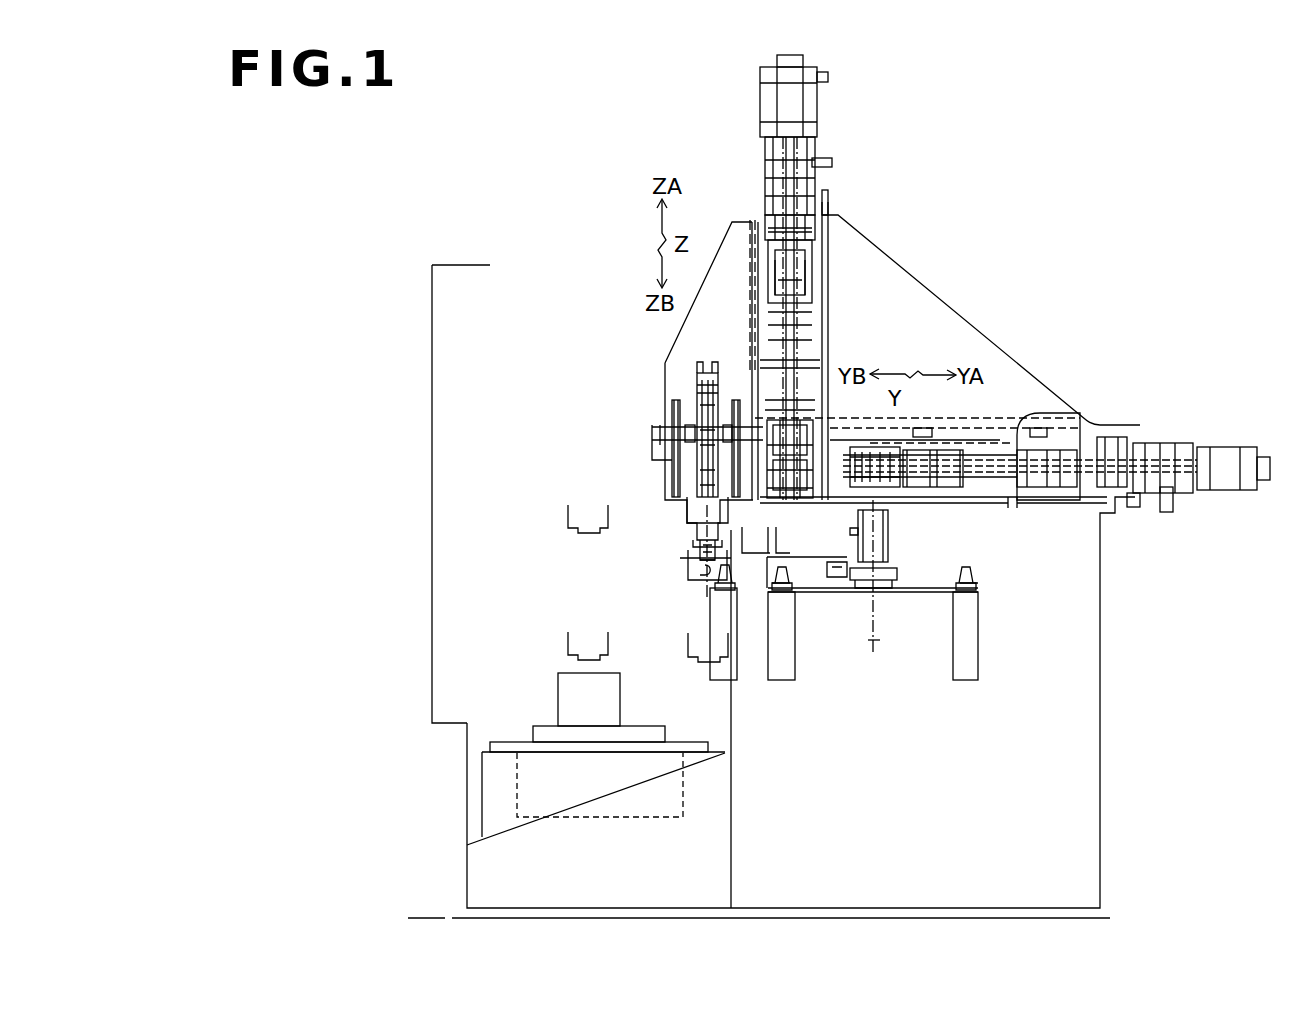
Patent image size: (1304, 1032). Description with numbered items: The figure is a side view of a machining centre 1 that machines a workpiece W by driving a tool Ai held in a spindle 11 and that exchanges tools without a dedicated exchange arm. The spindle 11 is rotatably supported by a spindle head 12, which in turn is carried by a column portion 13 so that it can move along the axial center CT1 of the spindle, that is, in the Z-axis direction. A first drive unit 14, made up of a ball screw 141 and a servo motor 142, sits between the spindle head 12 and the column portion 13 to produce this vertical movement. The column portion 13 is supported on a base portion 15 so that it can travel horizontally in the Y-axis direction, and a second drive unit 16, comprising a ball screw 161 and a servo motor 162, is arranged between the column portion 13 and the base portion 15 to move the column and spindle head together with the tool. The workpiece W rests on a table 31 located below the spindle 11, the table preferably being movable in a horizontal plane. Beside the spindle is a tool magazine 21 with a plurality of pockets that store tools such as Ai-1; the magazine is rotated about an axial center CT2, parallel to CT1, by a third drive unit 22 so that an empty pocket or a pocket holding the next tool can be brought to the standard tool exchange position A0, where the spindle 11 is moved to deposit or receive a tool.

The machining centre 1 is at (1007, 224).
The spindle 11 is at (668, 488).
The spindle head 12 is at (684, 355).
The column portion 13 is at (968, 322).
The first drive unit 14 is at (868, 277).
The ball screw 141 is at (810, 318).
The servo motor 142 is at (815, 102).
The base portion 15 is at (1103, 594).
The second drive unit 16 is at (1056, 418).
The ball screw 161 is at (1125, 440).
The servo motor 162 is at (1222, 450).
The tool magazine 21 is at (871, 655).
The third drive unit 22 is at (889, 545).
The table 31 is at (542, 727).
The workpiece W is at (565, 673).
The standard position A0 is at (736, 670).
The tool Ai is at (692, 540).
The tool Ai-1 is at (792, 670).
The axial center CT1 is at (688, 570).
The axial center CT2 is at (875, 640).